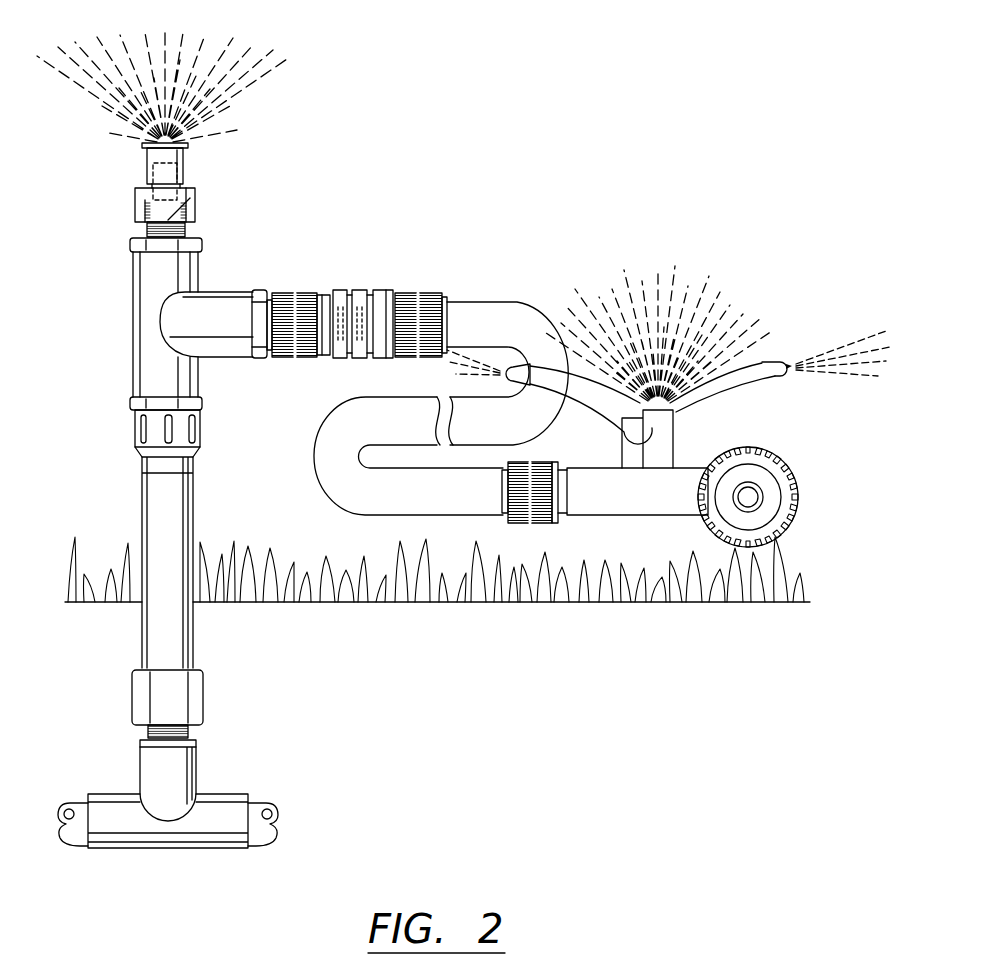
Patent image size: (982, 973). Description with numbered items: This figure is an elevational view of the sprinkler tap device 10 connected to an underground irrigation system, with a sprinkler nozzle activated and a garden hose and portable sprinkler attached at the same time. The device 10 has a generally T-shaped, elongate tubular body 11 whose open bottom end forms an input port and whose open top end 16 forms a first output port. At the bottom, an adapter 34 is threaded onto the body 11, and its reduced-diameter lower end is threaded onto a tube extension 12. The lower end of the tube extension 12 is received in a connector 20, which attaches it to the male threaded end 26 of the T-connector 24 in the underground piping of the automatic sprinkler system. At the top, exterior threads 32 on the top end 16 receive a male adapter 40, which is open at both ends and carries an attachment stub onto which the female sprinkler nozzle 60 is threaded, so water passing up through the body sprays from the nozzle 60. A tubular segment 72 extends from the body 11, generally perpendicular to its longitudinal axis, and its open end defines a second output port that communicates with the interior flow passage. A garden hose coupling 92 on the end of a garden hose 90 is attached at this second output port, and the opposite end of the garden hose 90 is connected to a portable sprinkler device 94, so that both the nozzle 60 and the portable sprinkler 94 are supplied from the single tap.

The sprinkler tap device 10 is at (252, 246).
The T-shaped body 11 is at (125, 348).
The tube extension 12 is at (137, 502).
The top end 16 is at (190, 198).
The connector 20 is at (220, 700).
The T-connector 24 is at (197, 765).
The male threaded end 26 is at (140, 733).
The exterior threads 32 is at (146, 228).
The adapter 34 is at (128, 430).
The male adapter 40 is at (126, 193).
The sprinkler nozzle 60 is at (192, 163).
The tubular segment 72 is at (237, 294).
The garden hose 90 is at (506, 300).
The garden hose coupling 92 is at (418, 296).
The portable sprinkler device 94 is at (680, 441).